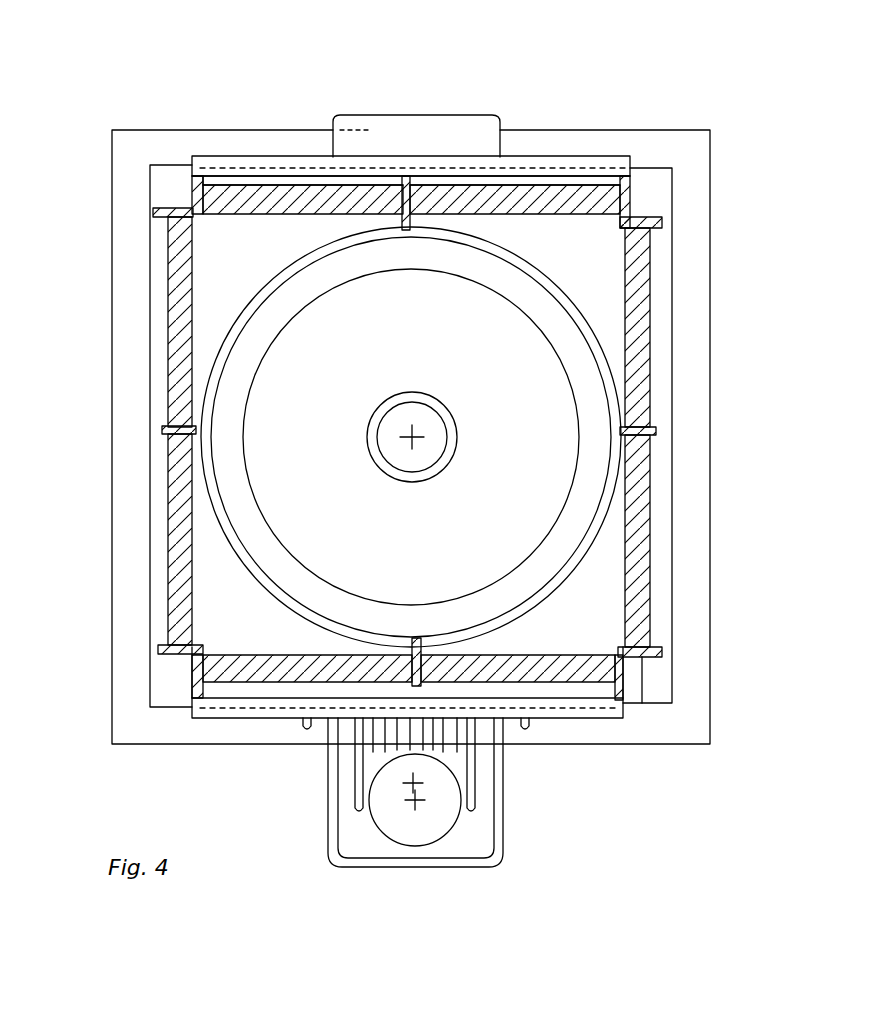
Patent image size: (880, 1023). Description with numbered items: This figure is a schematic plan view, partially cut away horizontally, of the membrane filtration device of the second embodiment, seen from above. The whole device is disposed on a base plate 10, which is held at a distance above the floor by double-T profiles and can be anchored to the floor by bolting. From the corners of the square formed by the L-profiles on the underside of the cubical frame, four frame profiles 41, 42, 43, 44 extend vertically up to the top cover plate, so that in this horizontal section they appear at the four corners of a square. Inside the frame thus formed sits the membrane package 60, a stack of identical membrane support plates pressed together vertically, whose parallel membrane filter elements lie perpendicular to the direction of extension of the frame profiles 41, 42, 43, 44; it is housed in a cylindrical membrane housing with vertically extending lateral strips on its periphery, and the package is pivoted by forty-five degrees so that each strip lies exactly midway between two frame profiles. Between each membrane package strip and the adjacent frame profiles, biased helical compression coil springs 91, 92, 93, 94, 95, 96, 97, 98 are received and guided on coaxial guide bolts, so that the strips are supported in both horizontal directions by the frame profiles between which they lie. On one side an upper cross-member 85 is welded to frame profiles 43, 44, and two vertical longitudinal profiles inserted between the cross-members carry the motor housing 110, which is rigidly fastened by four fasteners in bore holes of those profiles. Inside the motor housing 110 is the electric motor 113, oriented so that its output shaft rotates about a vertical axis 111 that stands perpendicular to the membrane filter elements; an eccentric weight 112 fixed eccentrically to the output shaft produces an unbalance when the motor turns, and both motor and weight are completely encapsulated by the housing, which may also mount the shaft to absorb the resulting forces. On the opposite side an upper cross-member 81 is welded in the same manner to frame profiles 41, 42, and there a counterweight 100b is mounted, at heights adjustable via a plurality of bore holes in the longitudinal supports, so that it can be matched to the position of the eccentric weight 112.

The base plate 10 is at (690, 662).
The frame profile 41 is at (630, 197).
The frame profile 42 is at (197, 205).
The frame profile 43 is at (187, 653).
The frame profile 44 is at (641, 693).
The membrane package 60 is at (592, 283).
The upper cross-member 81 is at (572, 176).
The upper cross-member 85 is at (243, 708).
The coil spring 91 is at (640, 540).
The coil spring 92 is at (635, 348).
The coil spring 93 is at (513, 200).
The coil spring 94 is at (297, 190).
The coil spring 95 is at (167, 307).
The coil spring 96 is at (177, 523).
The coil spring 97 is at (300, 662).
The coil spring 98 is at (585, 658).
The counterweight 100b is at (457, 138).
The motor housing 110 is at (457, 863).
The vertical axis 111 is at (425, 776).
The eccentric weight 112 is at (400, 828).
The electric motor 113 is at (380, 743).